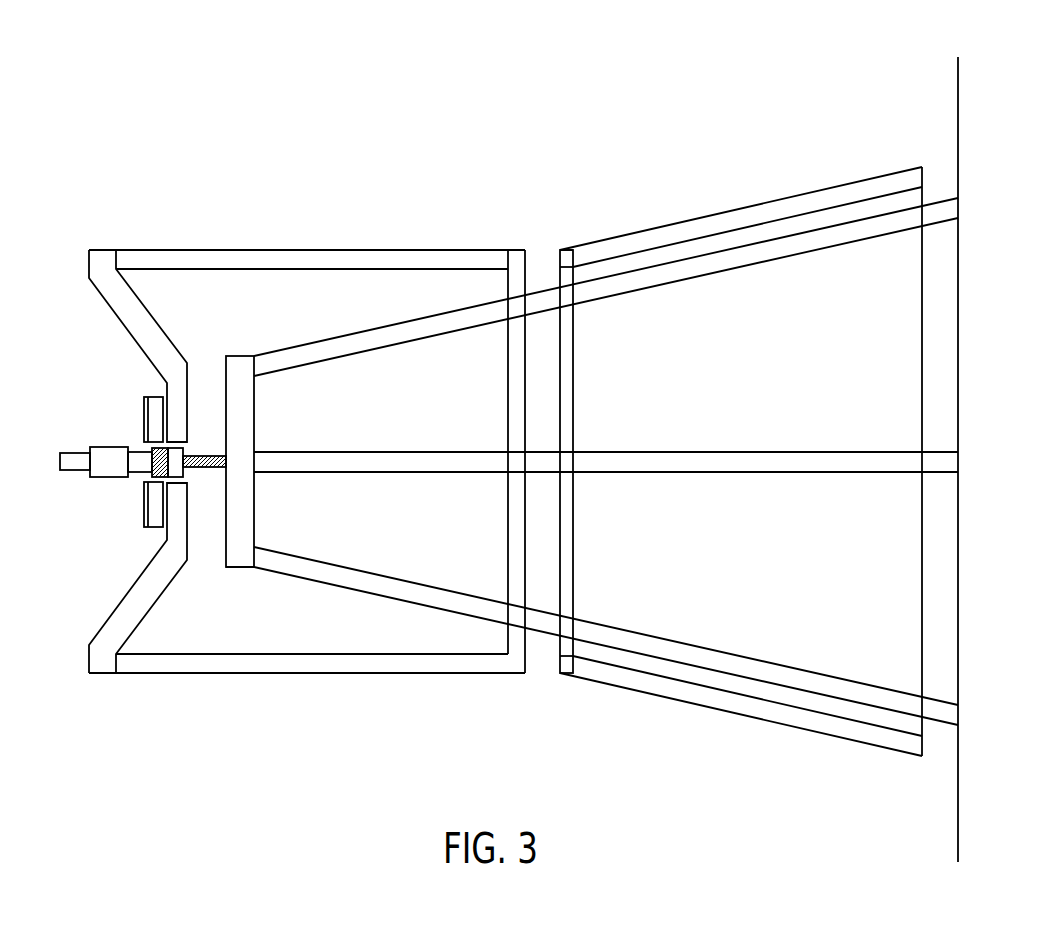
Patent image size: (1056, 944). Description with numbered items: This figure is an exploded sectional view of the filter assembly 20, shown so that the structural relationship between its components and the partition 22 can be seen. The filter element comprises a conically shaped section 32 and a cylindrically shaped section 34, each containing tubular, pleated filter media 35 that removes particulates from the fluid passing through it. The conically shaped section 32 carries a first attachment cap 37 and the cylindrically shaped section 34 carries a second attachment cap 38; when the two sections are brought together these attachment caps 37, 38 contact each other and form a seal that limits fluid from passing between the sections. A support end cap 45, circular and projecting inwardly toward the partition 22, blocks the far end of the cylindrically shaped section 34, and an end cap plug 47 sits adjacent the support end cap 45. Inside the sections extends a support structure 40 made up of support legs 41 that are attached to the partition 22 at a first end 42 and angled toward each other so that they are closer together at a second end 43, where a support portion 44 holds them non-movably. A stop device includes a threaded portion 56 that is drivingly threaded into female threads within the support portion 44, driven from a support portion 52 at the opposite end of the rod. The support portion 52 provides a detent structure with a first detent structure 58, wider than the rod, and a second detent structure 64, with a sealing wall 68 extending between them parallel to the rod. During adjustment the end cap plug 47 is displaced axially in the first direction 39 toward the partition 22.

The filter assembly 20 is at (203, 202).
The partition 22 is at (958, 127).
The conically shaped section 32 is at (710, 216).
The cylindrically shaped section 34 is at (322, 249).
The filter media 35 is at (570, 250).
The first attachment cap 37 is at (508, 392).
The second attachment cap 38 is at (573, 386).
The first direction 39 is at (942, 422).
The support structure 40 is at (370, 628).
The support legs 41 is at (778, 260).
The first end 42 is at (946, 719).
The second end 43 is at (263, 571).
The support portion 44 is at (255, 414).
The support end cap 45 is at (112, 611).
The end cap plug 47 is at (143, 520).
The support portion 52 is at (59, 453).
The threaded portion 56 is at (216, 455).
The first detent structure 58 is at (101, 478).
The second detent structure 64 is at (186, 469).
The sealing wall 68 is at (150, 449).